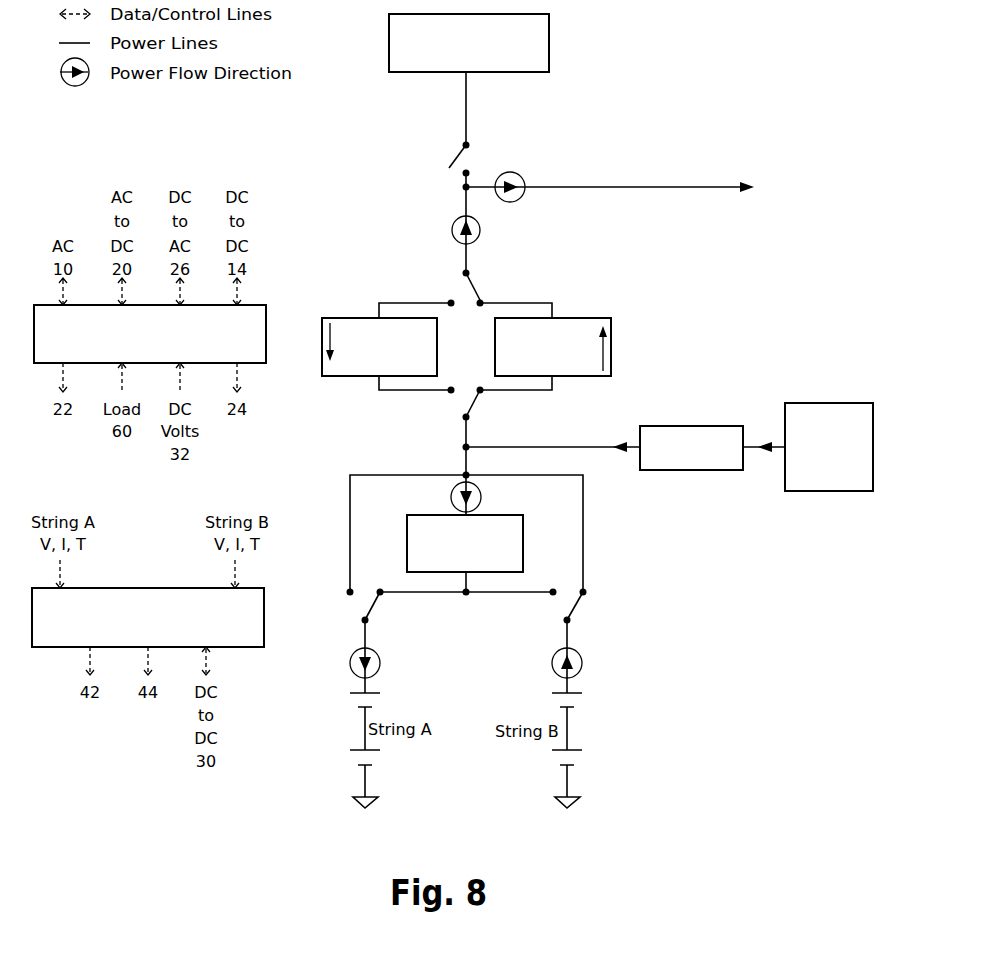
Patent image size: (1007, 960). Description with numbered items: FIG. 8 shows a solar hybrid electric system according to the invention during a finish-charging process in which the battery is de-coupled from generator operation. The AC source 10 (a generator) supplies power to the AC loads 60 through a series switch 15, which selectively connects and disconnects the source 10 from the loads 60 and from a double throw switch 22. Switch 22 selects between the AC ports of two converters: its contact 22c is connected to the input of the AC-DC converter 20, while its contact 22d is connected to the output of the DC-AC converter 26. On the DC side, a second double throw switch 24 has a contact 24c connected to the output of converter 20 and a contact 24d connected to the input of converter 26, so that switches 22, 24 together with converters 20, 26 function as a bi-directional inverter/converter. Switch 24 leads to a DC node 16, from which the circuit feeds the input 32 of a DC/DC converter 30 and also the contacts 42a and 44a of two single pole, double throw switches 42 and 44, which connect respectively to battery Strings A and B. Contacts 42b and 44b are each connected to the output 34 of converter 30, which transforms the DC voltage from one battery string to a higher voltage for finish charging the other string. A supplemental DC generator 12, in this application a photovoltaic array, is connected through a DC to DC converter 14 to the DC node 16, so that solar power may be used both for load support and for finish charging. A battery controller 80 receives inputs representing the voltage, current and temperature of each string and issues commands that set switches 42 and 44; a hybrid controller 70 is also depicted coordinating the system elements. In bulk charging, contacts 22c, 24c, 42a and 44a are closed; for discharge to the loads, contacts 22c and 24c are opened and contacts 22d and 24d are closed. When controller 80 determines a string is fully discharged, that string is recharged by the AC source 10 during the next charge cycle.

The AC source 10 is at (469, 43).
The DC generator 12 is at (808, 447).
The DC to DC converter 14 is at (691, 448).
The series switch 15 is at (449, 159).
The DC bus node 16 is at (538, 446).
The AC-DC converter 20 is at (379, 347).
The double throw switch 22 is at (483, 283).
The contact 22c is at (417, 299).
The contact 22d is at (515, 299).
The double throw switch 24 is at (458, 408).
The contact 24c is at (417, 396).
The contact 24d is at (515, 396).
The DC-AC converter 26 is at (553, 347).
The DC/DC converter 30 is at (465, 543).
The input 32 is at (466, 524).
The output 34 is at (466, 584).
The single pole, double throw switch 42 is at (361, 642).
The contact 42a is at (329, 582).
The contact 42b is at (400, 603).
The single pole, double throw switch 44 is at (572, 642).
The contact 44a is at (603, 582).
The contact 44b is at (532, 603).
The AC loads 60 is at (642, 187).
The hybrid controller 70 is at (150, 334).
The battery controller 80 is at (148, 617).